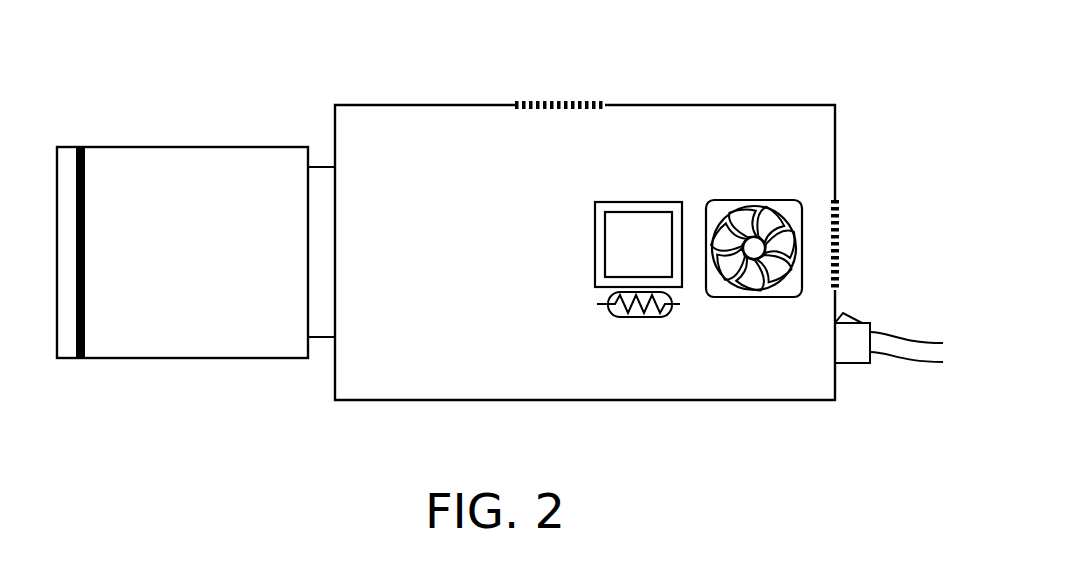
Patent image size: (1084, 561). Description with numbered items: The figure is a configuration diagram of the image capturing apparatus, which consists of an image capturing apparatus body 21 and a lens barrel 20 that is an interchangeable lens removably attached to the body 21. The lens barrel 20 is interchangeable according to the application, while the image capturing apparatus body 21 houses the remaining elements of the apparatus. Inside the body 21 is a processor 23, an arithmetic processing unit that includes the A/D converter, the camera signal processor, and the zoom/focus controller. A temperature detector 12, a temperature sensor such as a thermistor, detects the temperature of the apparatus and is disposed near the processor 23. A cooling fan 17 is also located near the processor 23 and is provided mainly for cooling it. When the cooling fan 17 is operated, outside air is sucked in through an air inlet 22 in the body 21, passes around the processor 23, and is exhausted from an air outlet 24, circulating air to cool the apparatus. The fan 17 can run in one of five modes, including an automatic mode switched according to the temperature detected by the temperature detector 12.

The lens barrel 20 is at (153, 146).
The image capturing apparatus body 21 is at (363, 103).
The air inlet 22 is at (533, 100).
The processor 23 is at (671, 202).
The air outlet 24 is at (840, 207).
The temperature detector 12 is at (638, 318).
The cooling fan 17 is at (755, 299).